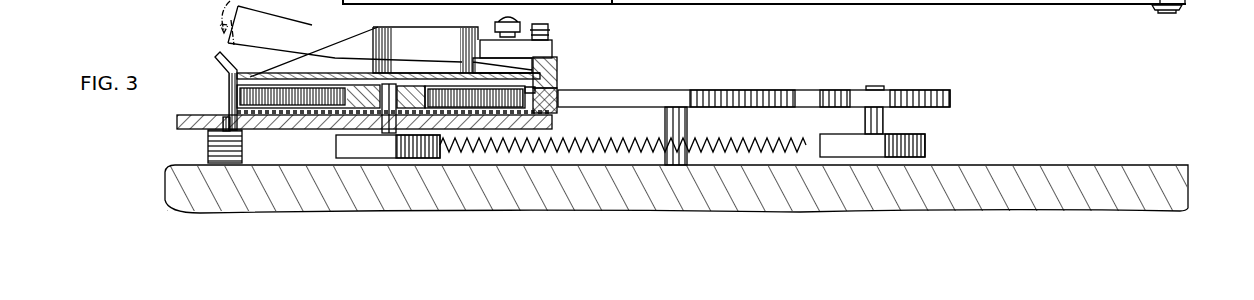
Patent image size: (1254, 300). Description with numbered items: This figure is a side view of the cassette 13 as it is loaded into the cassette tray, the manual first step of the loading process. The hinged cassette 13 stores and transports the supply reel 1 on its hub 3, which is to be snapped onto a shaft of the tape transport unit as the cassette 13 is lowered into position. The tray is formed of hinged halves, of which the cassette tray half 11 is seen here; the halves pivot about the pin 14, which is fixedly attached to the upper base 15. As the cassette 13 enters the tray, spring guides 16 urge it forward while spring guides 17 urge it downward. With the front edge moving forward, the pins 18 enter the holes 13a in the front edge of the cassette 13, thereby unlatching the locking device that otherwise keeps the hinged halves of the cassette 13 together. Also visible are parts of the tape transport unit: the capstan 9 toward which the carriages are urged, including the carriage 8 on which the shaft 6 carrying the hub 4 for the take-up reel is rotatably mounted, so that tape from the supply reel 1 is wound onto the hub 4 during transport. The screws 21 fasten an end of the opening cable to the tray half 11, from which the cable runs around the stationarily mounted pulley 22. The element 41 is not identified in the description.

The supply reel 1 is at (287, 103).
The hub 3 is at (342, 115).
The hub 4 is at (822, 92).
The shaft 6 is at (880, 86).
The carriage 8 is at (925, 145).
The capstan 9 is at (686, 92).
The cassette tray half 11 is at (446, 48).
The cassette 13 is at (396, 83).
The holes 13a is at (556, 108).
The pin 14 is at (212, 139).
The upper base 15 is at (178, 164).
The spring guides 16 is at (214, 70).
The spring guides 17 is at (472, 50).
The pins 18 is at (560, 85).
The screws 21 is at (550, 38).
The pulley 22 is at (522, 22).
The mounting plate 41 is at (698, 1).